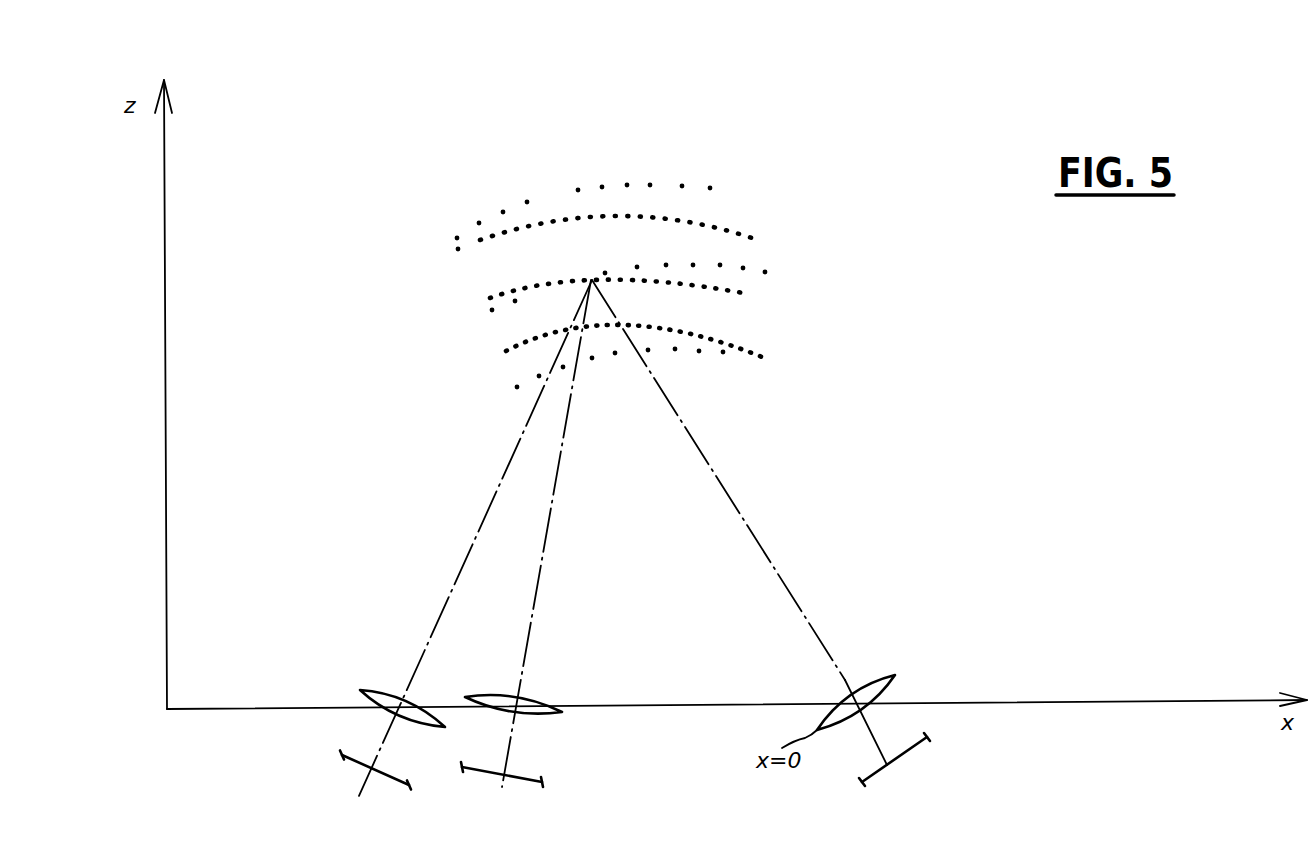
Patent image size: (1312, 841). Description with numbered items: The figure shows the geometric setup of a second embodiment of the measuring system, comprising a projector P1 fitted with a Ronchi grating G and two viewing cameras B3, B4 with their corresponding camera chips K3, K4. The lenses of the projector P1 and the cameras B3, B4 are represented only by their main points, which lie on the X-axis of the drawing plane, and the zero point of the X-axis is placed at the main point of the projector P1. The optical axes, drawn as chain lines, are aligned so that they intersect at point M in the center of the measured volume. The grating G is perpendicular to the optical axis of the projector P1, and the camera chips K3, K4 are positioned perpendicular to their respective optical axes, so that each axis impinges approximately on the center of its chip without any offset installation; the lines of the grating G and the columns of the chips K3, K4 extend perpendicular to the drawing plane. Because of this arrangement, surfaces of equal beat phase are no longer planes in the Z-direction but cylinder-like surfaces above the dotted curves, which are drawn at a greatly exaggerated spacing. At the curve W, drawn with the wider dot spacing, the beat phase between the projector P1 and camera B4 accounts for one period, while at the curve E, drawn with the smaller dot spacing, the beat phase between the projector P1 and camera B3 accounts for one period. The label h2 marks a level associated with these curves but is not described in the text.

The curve W is at (552, 197).
The height level h2 of mark plane h2 is at (733, 192).
The curve E is at (468, 243).
The point M is at (592, 280).
The viewing camera B4 is at (362, 690).
The viewing camera B3 is at (537, 700).
The projector P1 is at (893, 678).
The camera chip K4 is at (356, 765).
The camera chip K3 is at (488, 777).
The Ronchi grating G is at (882, 772).